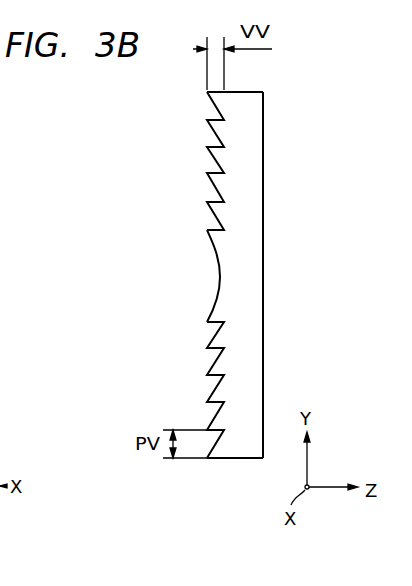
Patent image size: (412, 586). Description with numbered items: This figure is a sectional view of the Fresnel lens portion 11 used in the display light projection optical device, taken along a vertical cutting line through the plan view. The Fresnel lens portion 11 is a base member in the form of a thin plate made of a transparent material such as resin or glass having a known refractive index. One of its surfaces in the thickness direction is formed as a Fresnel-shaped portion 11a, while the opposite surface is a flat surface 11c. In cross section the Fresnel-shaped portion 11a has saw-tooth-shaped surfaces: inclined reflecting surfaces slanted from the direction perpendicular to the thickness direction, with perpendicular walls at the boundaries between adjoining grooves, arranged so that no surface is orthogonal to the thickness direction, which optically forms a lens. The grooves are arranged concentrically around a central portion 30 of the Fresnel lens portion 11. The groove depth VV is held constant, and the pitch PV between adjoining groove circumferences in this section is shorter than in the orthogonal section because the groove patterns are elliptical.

The Fresnel lens portion 11 is at (265, 214).
The Fresnel-shaped portion 11a is at (198, 190).
The flat surface 11c is at (272, 337).
The central portion 30 is at (218, 277).